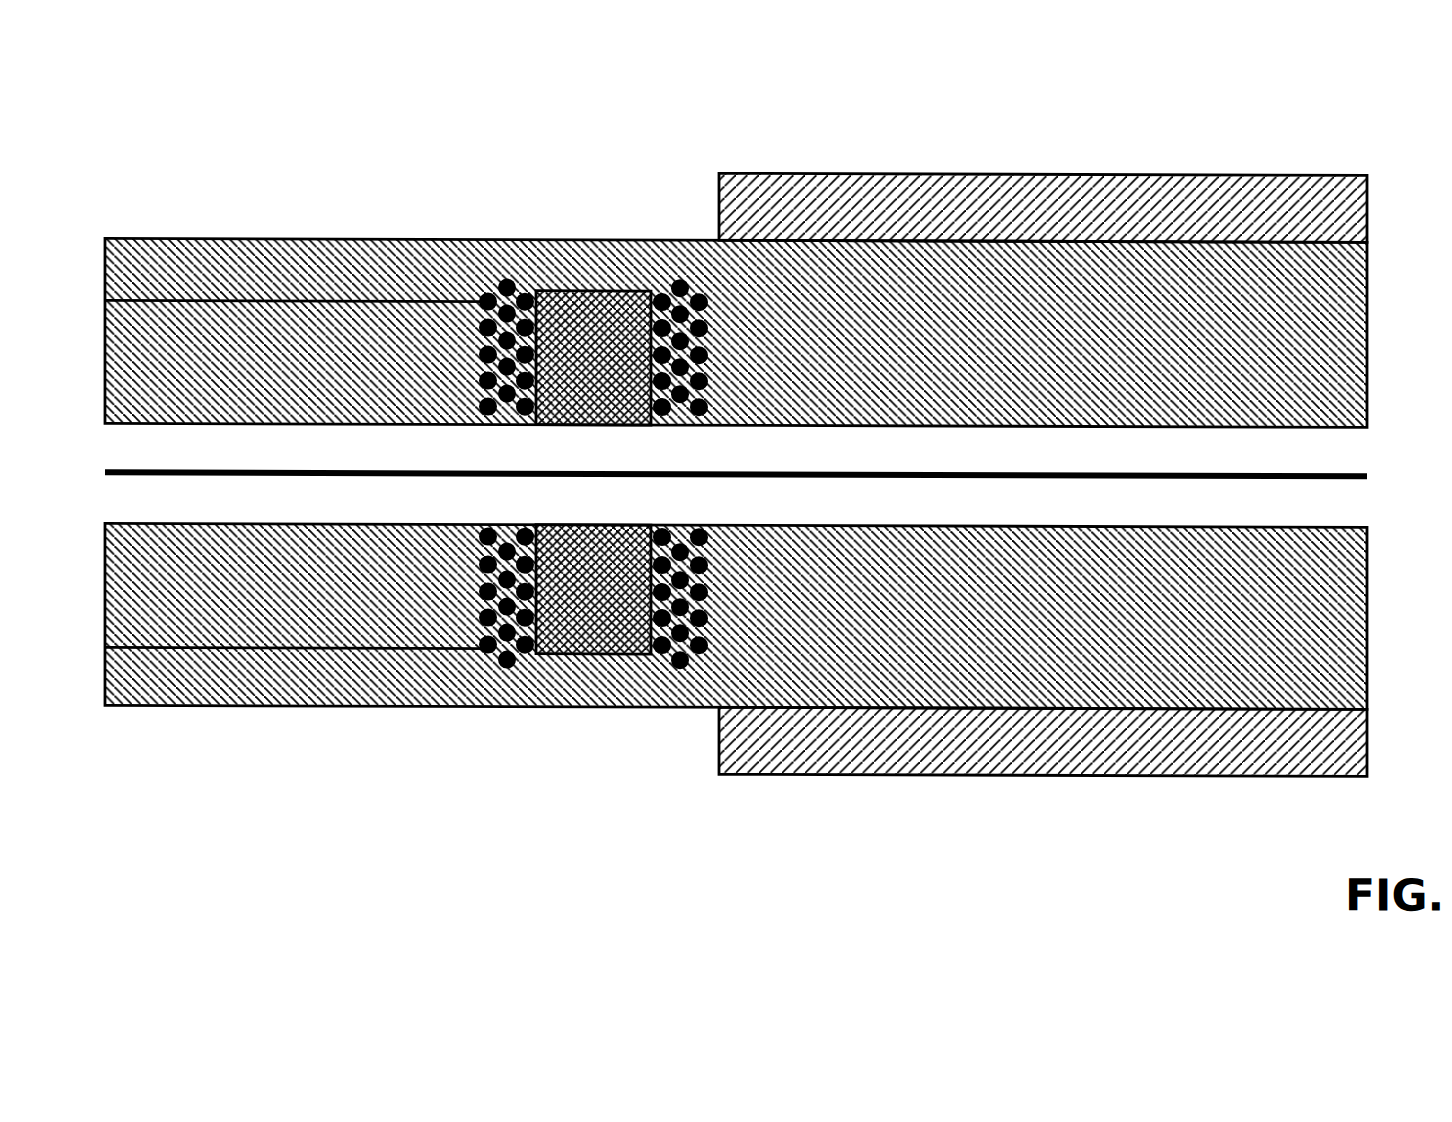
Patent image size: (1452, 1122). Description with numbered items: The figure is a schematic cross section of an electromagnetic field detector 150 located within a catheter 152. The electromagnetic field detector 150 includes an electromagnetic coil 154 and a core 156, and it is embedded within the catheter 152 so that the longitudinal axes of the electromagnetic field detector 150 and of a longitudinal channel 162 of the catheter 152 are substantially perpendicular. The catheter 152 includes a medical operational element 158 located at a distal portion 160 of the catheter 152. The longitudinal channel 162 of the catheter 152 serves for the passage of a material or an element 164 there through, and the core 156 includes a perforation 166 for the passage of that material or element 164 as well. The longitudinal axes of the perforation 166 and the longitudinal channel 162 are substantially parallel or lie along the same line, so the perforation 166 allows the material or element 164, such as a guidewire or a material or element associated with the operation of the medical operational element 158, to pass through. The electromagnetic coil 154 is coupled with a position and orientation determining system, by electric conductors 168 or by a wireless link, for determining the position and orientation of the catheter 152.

The electromagnetic field detector 150 is at (776, 271).
The catheter 152 is at (1368, 258).
The electromagnetic coil 154 is at (505, 290).
The core 156 is at (612, 290).
The medical operational element 158 is at (1200, 171).
The distal portion 160 is at (777, 408).
The longitudinal channel 162 is at (1315, 453).
The material or element 164 is at (774, 634).
The perforation 166 is at (591, 506).
The electric conductors 168 is at (285, 298).